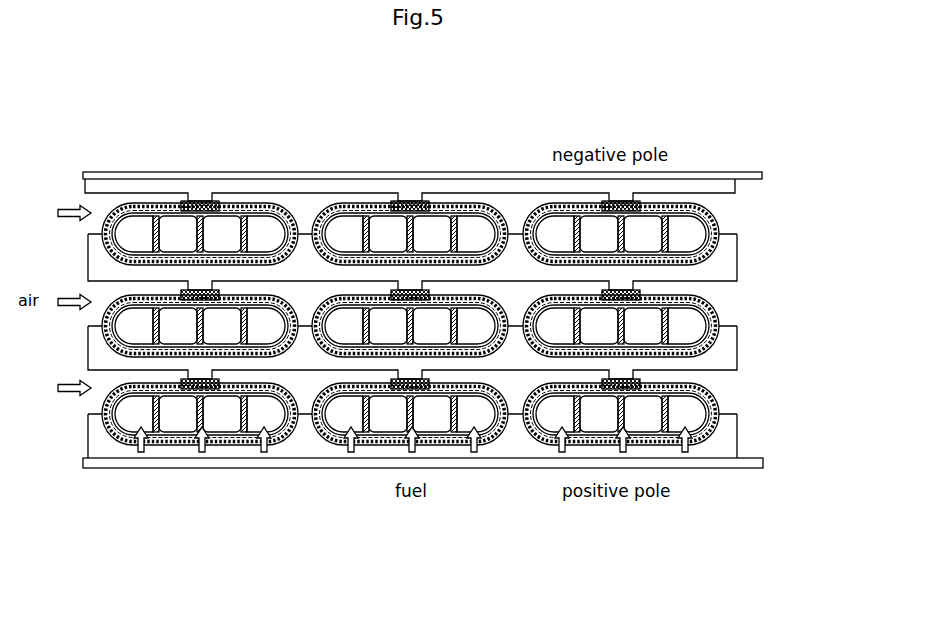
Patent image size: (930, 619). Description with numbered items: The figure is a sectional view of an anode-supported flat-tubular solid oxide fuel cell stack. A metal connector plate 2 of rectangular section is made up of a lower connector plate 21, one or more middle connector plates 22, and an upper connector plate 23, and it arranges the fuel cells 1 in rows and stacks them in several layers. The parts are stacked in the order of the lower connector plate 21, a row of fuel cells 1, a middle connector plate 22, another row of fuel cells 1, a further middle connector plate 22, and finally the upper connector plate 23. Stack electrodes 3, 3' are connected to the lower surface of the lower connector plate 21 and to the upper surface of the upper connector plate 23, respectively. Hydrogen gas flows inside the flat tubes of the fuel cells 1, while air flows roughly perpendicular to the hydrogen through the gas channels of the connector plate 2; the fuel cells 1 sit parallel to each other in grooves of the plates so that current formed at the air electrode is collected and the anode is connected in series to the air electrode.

The fuel cell 1 is at (284, 208).
The connector plate 2 is at (479, 257).
The stack electrode 3 is at (423, 526).
The stack electrode 3' is at (422, 120).
The lower connector plate 21 is at (451, 418).
The middle connector plate 22 is at (453, 218).
The upper connector plate 23 is at (730, 194).